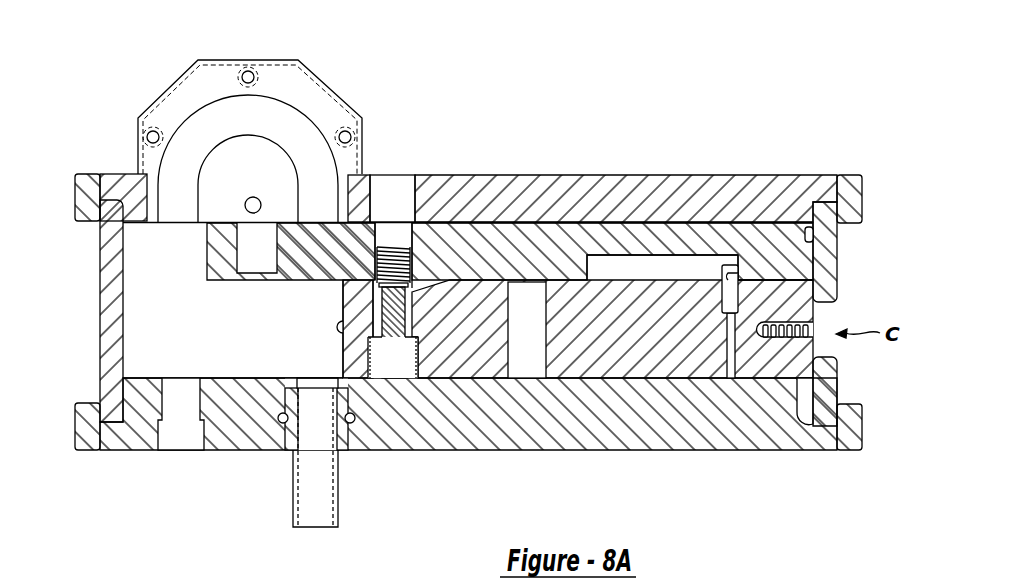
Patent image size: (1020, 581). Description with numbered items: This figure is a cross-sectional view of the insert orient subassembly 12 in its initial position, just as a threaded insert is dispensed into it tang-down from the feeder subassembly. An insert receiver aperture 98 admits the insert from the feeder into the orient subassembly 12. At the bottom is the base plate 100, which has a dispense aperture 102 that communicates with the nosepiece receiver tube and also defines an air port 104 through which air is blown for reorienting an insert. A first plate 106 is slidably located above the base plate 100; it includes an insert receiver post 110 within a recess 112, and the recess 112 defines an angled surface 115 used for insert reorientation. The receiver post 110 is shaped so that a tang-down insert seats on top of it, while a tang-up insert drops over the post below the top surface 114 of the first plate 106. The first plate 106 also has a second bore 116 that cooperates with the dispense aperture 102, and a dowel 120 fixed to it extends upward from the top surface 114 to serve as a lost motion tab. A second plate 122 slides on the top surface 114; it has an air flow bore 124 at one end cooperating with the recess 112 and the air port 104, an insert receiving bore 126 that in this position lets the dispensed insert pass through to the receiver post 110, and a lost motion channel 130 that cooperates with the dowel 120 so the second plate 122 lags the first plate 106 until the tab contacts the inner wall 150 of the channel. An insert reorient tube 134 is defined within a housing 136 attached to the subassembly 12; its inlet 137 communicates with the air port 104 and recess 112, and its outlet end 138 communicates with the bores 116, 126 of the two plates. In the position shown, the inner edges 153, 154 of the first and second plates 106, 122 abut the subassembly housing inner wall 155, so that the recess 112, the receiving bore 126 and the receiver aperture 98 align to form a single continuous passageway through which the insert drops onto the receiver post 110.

The orient subassembly 12 is at (867, 163).
The insert receiver aperture 98 is at (407, 187).
The base plate 100 is at (470, 428).
The dispense aperture 102 is at (315, 378).
The air port 104 is at (178, 392).
The first plate 106 is at (692, 360).
The insert receiver post 110 is at (395, 362).
The recess 112 is at (376, 368).
The top surface 114 is at (663, 272).
The angled surface 115 is at (437, 280).
The second bore 116 is at (528, 362).
The dowel 120 is at (840, 238).
The second plate 122 is at (727, 243).
The air flow bore 124 is at (248, 258).
The insert receiving bore 126 is at (392, 233).
The lost motion channel 130 is at (612, 257).
The insert reorient tube 134 is at (218, 110).
The housing 136 is at (168, 88).
The inlet 137 is at (178, 200).
The outlet end 138 is at (317, 213).
The inner wall 150 is at (609, 259).
The inner edge 153 is at (818, 348).
The inner edge 154 is at (816, 313).
The subassembly housing inner wall 155 is at (733, 273).